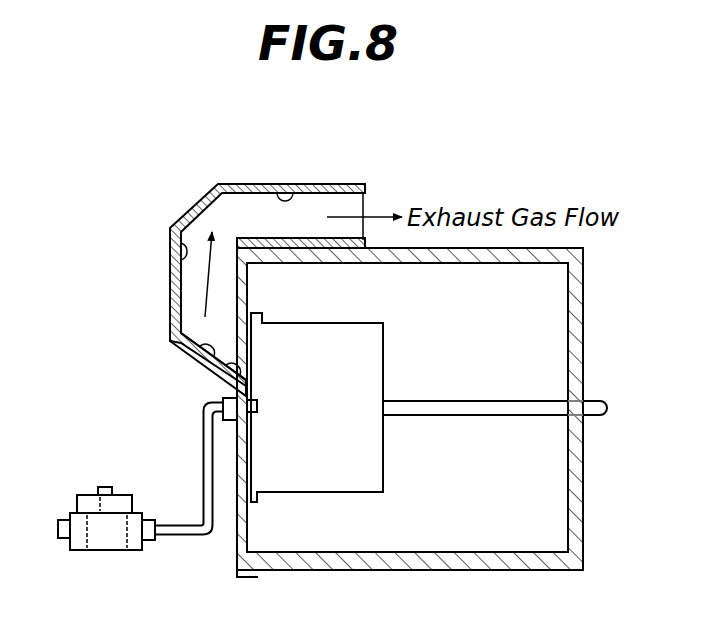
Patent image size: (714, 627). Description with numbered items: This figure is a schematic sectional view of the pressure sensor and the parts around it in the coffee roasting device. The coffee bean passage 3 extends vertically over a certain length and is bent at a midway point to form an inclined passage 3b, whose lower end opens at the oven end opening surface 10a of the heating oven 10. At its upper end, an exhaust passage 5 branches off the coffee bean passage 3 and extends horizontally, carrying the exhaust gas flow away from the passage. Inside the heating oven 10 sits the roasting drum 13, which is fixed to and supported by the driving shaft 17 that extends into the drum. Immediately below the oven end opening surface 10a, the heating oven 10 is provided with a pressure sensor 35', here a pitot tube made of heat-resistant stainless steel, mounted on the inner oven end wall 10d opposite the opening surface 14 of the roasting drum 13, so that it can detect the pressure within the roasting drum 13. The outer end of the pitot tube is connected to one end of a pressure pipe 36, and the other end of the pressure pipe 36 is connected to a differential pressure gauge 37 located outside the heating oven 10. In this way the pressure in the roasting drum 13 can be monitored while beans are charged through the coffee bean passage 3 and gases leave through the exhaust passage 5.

The coffee bean passage 3 is at (170, 243).
The inclined passage 3b is at (200, 350).
The exhaust passage 5 is at (292, 186).
The heating oven 10 is at (583, 291).
The oven end opening surface 10a is at (227, 370).
The inner oven end wall 10d is at (238, 538).
The roasting drum 13 is at (368, 320).
The opening surface 14 is at (247, 333).
The driving shaft 17 is at (471, 399).
The pressure sensor 35' is at (285, 350).
The pressure pipe 36 is at (203, 448).
The differential pressure gauge 37 is at (80, 493).